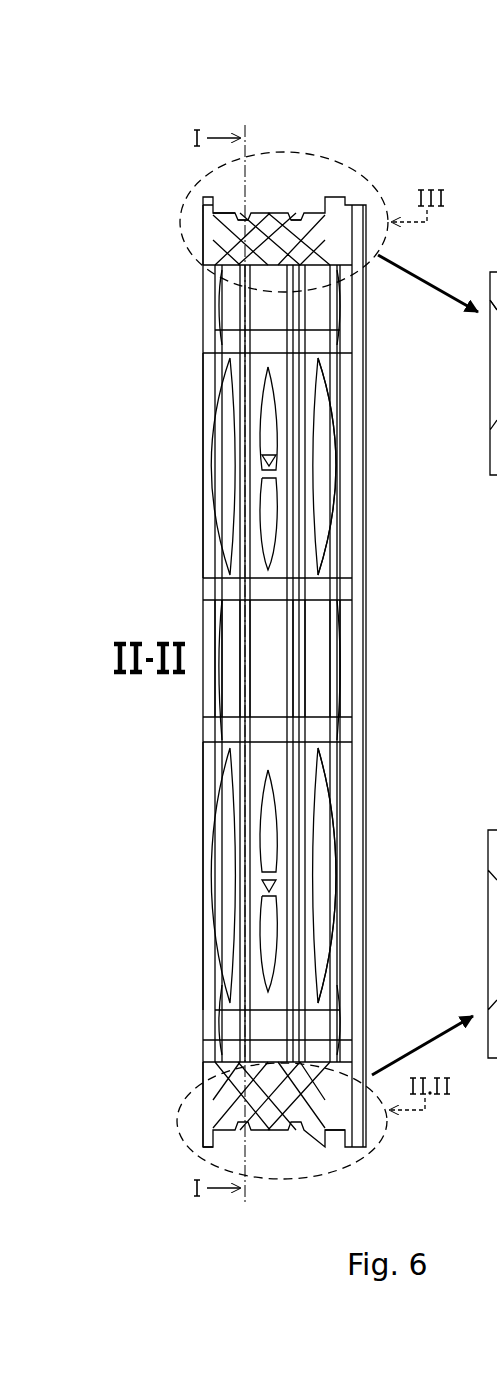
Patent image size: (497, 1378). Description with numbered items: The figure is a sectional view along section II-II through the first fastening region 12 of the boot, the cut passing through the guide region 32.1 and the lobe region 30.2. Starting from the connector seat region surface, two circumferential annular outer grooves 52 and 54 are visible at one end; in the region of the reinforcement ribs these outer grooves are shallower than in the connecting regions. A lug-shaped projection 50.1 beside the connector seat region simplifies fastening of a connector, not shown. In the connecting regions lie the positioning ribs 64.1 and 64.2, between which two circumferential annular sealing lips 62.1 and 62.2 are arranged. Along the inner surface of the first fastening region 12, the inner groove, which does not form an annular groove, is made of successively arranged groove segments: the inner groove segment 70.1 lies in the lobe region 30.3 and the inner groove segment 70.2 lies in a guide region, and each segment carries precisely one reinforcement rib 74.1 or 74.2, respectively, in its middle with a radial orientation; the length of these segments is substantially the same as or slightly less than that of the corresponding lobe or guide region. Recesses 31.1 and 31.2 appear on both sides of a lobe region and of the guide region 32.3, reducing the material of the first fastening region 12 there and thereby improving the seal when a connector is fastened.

The first fastening region 12 is at (343, 85).
The outer groove 52 is at (243, 208).
The outer groove 54 is at (295, 210).
The guide region 32.1 is at (140, 233).
The inner groove segment 70.1 is at (262, 435).
The lobe region 30.3 is at (165, 470).
The reinforcement rib 74.1 is at (270, 468).
The recess 31.1 is at (322, 471).
The positioning rib 64.1 is at (200, 622).
The sealing lip 62.1 is at (205, 675).
The sealing lip 62.2 is at (300, 632).
The positioning rib 64.2 is at (318, 680).
The inner groove segment 70.2 is at (205, 787).
The guide region 32.3 is at (180, 823).
The recess 31.2 is at (322, 868).
The lug-shaped projection 50.1 is at (496, 805).
The reinforcement rib 74.2 is at (240, 915).
The lobe region 30.2 is at (145, 1095).